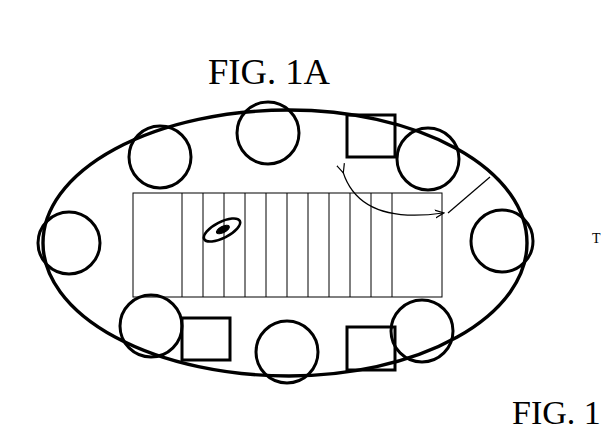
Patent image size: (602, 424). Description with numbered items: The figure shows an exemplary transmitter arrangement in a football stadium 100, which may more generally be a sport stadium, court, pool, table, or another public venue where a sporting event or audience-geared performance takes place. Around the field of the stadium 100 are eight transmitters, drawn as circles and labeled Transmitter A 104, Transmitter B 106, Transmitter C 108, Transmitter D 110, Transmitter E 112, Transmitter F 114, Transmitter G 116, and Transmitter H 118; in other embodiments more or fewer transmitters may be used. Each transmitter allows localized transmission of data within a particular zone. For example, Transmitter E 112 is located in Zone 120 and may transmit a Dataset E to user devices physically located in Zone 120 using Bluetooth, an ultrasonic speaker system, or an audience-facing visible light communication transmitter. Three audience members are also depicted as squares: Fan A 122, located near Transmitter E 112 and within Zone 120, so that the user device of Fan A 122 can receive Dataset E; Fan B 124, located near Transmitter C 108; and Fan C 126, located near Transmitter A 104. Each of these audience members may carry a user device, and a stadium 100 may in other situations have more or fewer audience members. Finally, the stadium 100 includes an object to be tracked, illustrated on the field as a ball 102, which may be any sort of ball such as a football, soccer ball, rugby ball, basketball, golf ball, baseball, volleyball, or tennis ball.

The stadium 100 is at (192, 122).
The ball 102 is at (204, 236).
The Transmitter A 104 is at (151, 326).
The Transmitter B 106 is at (287, 352).
The Transmitter C 108 is at (422, 331).
The Transmitter D 110 is at (502, 241).
The Transmitter E 112 is at (428, 159).
The Transmitter F 114 is at (268, 133).
The Transmitter G 116 is at (160, 157).
The Transmitter H 118 is at (69, 243).
The Zone 120 is at (416, 207).
The Fan A 122 is at (340, 169).
The Fan B 124 is at (371, 348).
The Fan C 126 is at (206, 339).